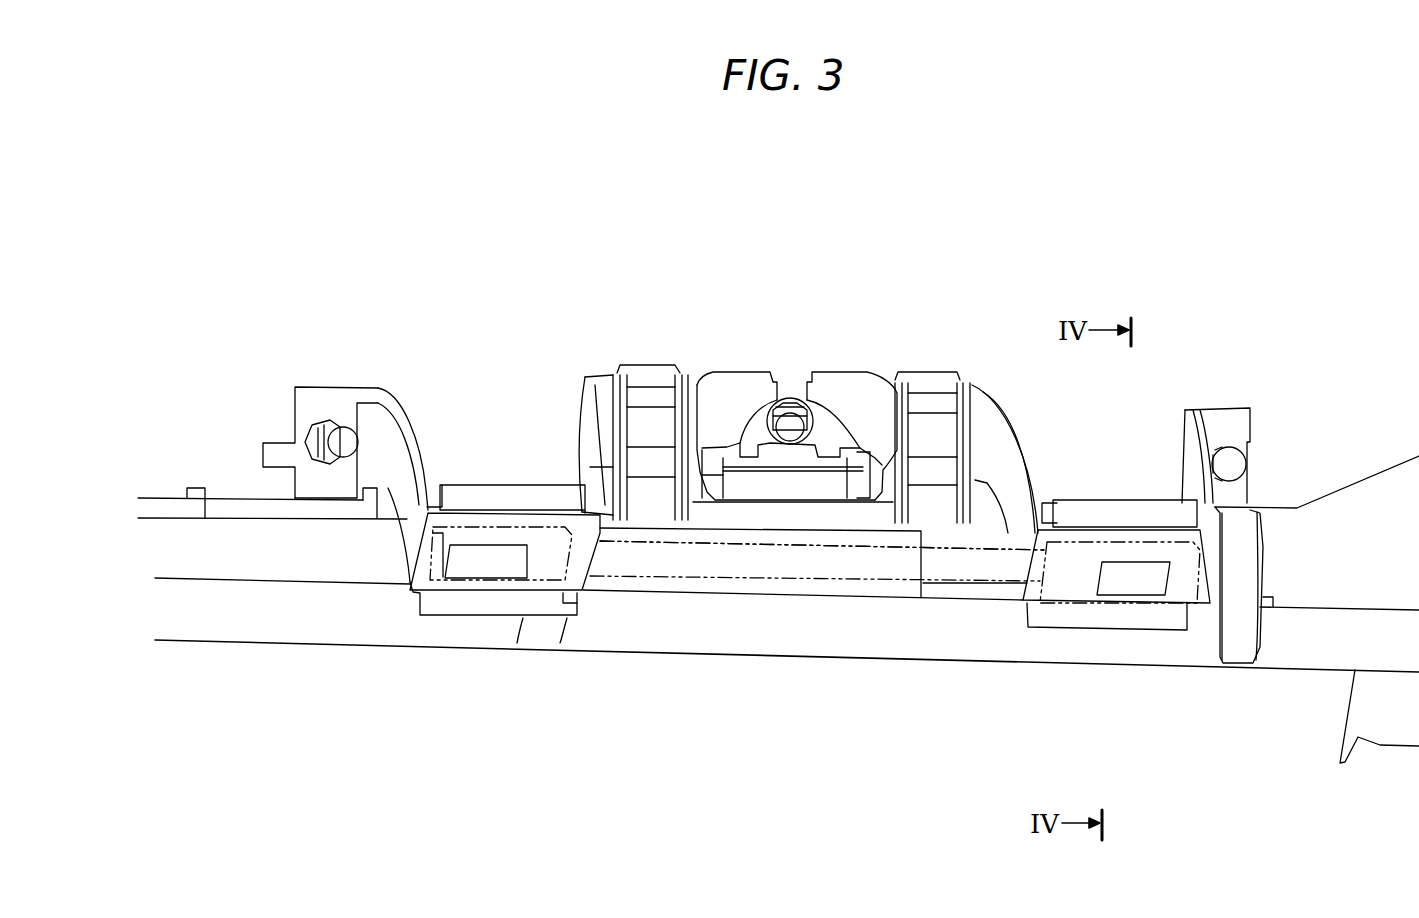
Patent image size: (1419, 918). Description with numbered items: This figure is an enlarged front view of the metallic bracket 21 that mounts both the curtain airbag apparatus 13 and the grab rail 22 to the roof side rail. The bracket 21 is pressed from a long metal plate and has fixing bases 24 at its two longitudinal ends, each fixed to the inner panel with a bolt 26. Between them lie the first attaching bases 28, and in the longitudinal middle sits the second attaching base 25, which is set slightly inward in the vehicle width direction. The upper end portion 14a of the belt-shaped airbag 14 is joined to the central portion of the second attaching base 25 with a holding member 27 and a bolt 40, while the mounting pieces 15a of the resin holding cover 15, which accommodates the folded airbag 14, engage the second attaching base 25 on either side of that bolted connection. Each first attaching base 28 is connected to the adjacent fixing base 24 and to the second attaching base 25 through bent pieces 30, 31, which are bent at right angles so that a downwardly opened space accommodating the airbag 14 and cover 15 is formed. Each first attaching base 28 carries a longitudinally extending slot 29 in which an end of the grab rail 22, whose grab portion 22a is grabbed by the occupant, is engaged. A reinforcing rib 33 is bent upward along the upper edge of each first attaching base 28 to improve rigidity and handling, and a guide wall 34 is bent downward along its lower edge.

The curtain airbag apparatus 13 is at (1289, 500).
The airbag 14 is at (273, 620).
The upper end portion 14a is at (827, 480).
The holding cover 15 is at (247, 540).
The mounting pieces 15a is at (650, 367).
The bracket 21 is at (1036, 260).
The grab rail 22 is at (828, 585).
The grab portion 22a is at (708, 580).
The fixing bases 24 is at (305, 415).
The second attaching base 25 is at (847, 387).
The bolt 26 is at (340, 432).
The holding member 27 is at (745, 417).
The first attaching bases 28 is at (432, 615).
The slot 29 is at (480, 573).
The bent piece 30 is at (397, 453).
The bent piece 31 is at (588, 415).
The reinforcing rib 33 is at (515, 492).
The guide wall 34 is at (573, 607).
The bolt 40 is at (792, 420).